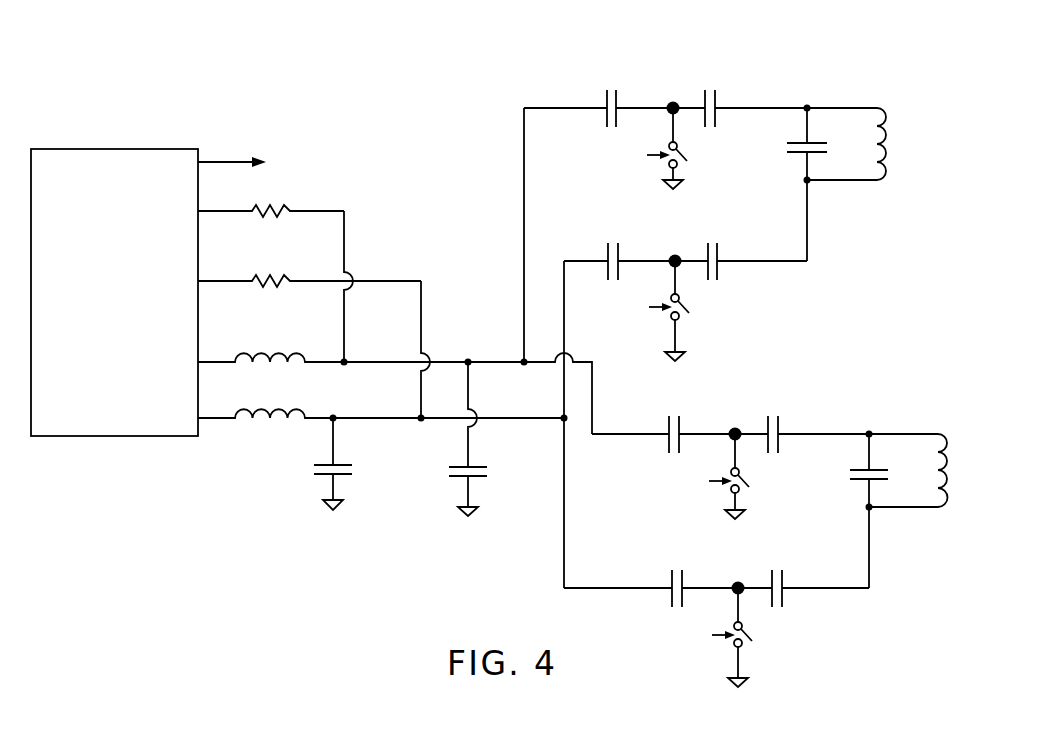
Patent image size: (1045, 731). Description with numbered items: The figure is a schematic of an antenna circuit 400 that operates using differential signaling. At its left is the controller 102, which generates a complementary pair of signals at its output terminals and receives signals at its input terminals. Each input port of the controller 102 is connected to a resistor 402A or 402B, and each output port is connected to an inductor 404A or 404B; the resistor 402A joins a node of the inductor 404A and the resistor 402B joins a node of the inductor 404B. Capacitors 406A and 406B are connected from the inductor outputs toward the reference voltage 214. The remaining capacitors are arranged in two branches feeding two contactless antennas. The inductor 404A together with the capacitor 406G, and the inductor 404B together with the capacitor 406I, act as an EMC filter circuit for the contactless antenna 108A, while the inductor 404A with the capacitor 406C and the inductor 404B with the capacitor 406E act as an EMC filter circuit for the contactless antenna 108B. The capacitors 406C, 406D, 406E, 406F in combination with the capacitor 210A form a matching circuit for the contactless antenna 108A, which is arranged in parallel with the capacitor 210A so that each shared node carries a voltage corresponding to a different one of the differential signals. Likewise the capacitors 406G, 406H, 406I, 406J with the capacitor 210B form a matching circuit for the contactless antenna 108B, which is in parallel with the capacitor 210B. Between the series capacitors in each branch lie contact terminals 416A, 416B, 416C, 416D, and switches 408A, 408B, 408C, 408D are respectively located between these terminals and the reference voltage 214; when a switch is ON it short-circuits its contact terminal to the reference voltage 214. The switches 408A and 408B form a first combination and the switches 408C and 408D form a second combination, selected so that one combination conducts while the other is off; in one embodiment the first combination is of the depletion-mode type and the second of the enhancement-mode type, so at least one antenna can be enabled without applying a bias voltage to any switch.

The antenna circuit 400 is at (186, 56).
The controller 102 is at (88, 437).
The resistor 402A is at (266, 205).
The resistor 402B is at (271, 267).
The inductor 404A is at (271, 357).
The inductor 404B is at (271, 411).
The capacitor 406A is at (461, 481).
The capacitor 406B is at (324, 481).
The capacitor 406C is at (605, 99).
The capacitor 406D is at (718, 102).
The capacitor 406E is at (607, 251).
The capacitor 406F is at (720, 255).
The capacitor 406G is at (668, 426).
The capacitor 406H is at (781, 428).
The capacitor 406I is at (671, 580).
The capacitor 406J is at (785, 582).
The contact terminal 416A is at (670, 103).
The contact terminal 416B is at (672, 255).
The contact terminal 416C is at (732, 429).
The contact terminal 416D is at (734, 583).
The switch 408A is at (683, 167).
The switch 408B is at (685, 320).
The switch 408C is at (745, 494).
The switch 408D is at (748, 648).
The capacitor 210A is at (798, 161).
The capacitor 210B is at (861, 483).
The contactless antenna 108A is at (880, 181).
The contactless antenna 108B is at (938, 467).
The reference voltage 214 is at (338, 483).